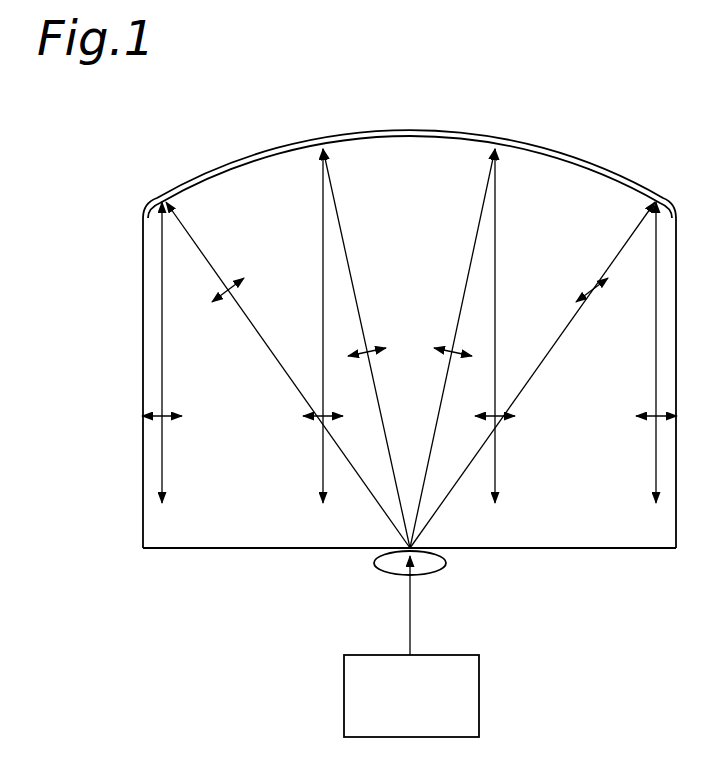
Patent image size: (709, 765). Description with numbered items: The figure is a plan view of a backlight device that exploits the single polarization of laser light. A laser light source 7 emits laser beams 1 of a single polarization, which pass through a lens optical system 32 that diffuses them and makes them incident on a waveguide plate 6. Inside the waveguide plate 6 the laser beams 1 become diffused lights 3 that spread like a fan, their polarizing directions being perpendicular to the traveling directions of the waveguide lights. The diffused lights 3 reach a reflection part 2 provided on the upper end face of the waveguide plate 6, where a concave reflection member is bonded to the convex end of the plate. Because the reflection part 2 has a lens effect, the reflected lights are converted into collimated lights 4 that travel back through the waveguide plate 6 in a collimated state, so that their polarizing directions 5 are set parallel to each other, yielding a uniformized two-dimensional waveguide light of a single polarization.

The laser beams 1 is at (410, 630).
The reflection part 2 is at (480, 135).
The diffused lights 3 is at (184, 230).
The collimated lights 4 is at (162, 290).
The polarizing directions 5 is at (146, 407).
The waveguide plate 6 is at (625, 550).
The laser light source 7 is at (480, 685).
The lens optical system 32 is at (448, 565).